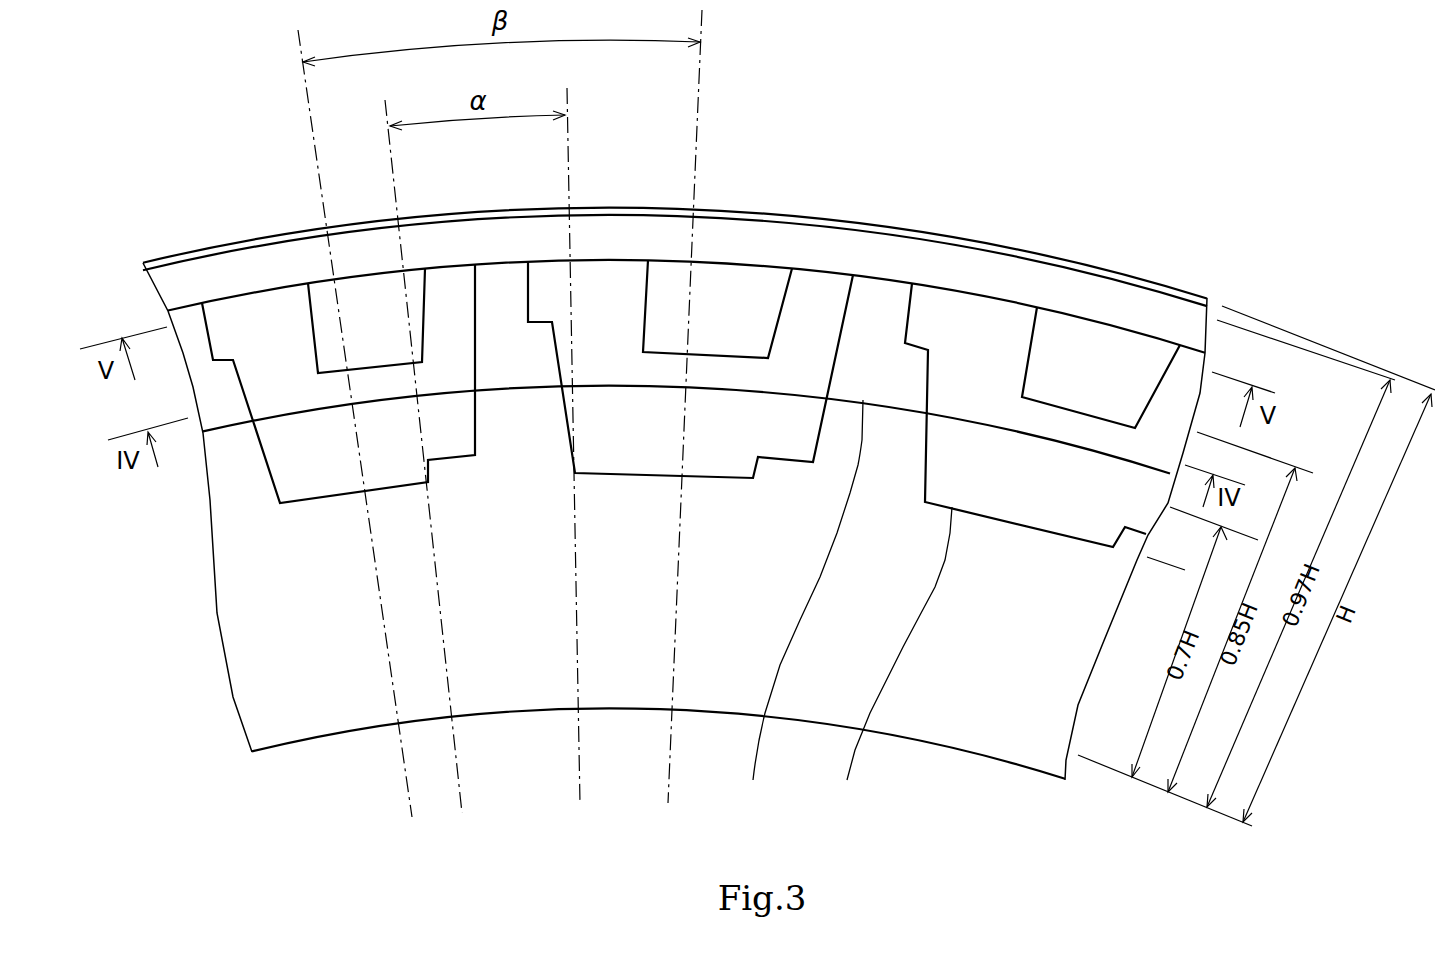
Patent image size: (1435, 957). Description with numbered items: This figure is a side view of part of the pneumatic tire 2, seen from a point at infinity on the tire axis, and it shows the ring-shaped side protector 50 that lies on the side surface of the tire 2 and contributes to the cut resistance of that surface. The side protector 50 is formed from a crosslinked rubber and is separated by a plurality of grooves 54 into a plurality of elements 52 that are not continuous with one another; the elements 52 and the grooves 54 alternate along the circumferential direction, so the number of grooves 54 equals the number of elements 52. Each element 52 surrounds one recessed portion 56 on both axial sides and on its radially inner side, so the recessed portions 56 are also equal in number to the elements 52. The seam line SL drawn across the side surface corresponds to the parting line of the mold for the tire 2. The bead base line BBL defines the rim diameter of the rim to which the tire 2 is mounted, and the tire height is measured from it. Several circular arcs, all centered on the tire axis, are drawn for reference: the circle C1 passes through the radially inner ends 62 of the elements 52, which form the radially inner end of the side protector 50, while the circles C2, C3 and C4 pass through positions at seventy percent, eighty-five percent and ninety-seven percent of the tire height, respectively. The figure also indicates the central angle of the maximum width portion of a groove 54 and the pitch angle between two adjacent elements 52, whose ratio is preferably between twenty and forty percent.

The pneumatic tire 2 is at (1276, 57).
The side protector 50 is at (935, 277).
The elements 52 is at (1100, 172).
The grooves 54 is at (912, 172).
The recessed portions 56 is at (1190, 172).
The radially inner ends 62 is at (891, 662).
The seam line SL is at (803, 609).
The bead base line BBL is at (1108, 774).
The circle C1 is at (1170, 567).
The circle C2 is at (1247, 537).
The circle C3 is at (1288, 462).
The circle C4 is at (1292, 343).